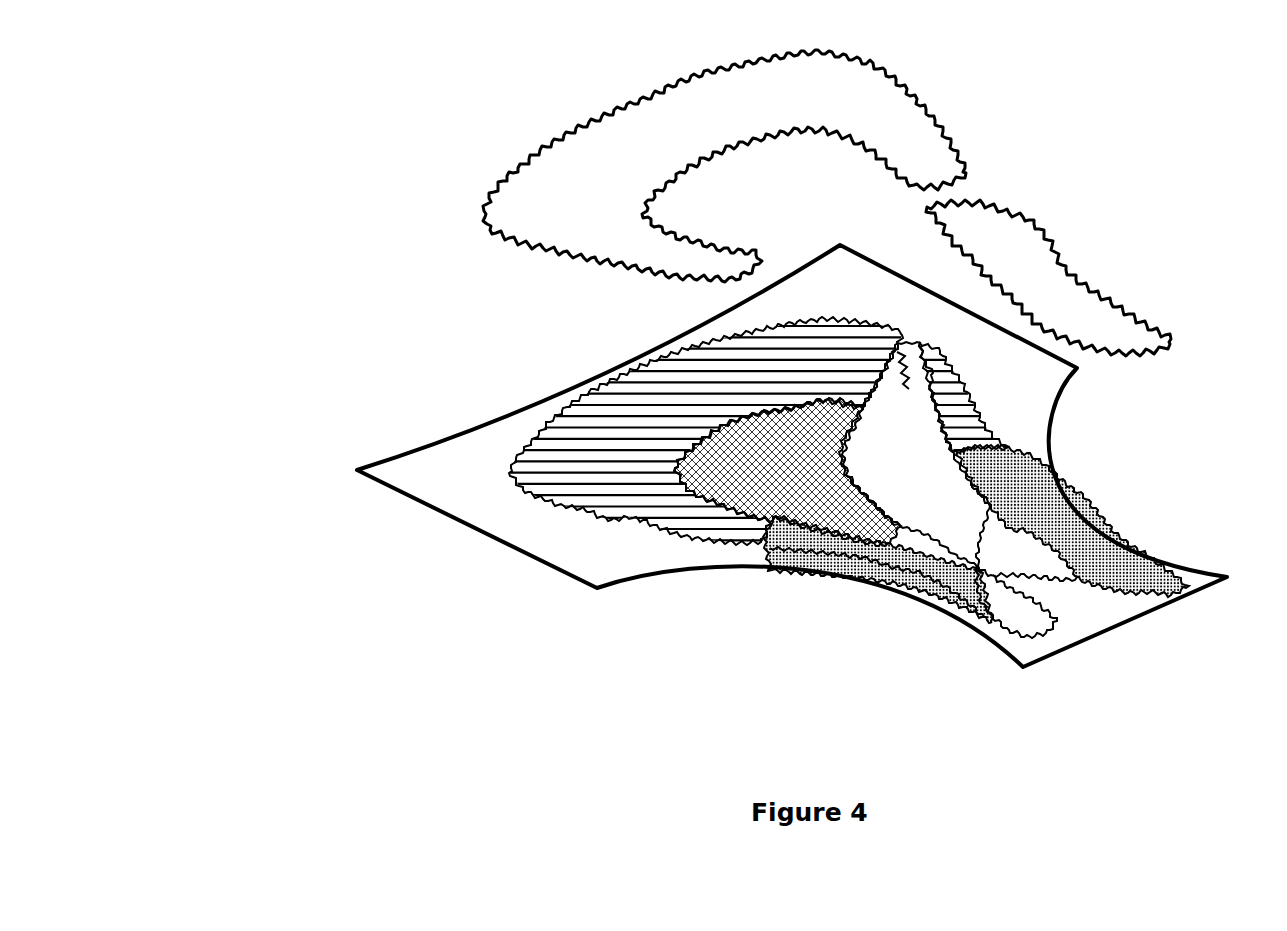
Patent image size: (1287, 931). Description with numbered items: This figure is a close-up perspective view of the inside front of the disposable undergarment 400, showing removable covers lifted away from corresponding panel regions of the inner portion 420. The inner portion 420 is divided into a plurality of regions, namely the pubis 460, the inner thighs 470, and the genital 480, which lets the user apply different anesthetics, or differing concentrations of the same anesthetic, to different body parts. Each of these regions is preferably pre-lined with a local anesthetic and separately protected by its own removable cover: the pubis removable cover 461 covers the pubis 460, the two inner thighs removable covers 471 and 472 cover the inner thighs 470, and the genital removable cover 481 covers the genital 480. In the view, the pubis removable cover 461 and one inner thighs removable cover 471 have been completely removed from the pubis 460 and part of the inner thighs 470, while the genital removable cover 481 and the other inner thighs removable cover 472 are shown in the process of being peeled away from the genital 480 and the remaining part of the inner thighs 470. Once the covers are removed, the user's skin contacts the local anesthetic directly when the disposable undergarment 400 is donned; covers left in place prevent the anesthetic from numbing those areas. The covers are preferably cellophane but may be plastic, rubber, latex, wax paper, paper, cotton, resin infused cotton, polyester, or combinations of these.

The disposable undergarment 400 is at (467, 270).
The inner portion 420 is at (490, 495).
The pubis 460 is at (632, 462).
The pubis removable cover 461 is at (880, 85).
The inner thighs 470 is at (838, 547).
The inner thighs removable cover 471 is at (1048, 272).
The inner thighs removable cover 472 is at (1012, 597).
The genital 480 is at (717, 468).
The genital removable cover 481 is at (905, 487).